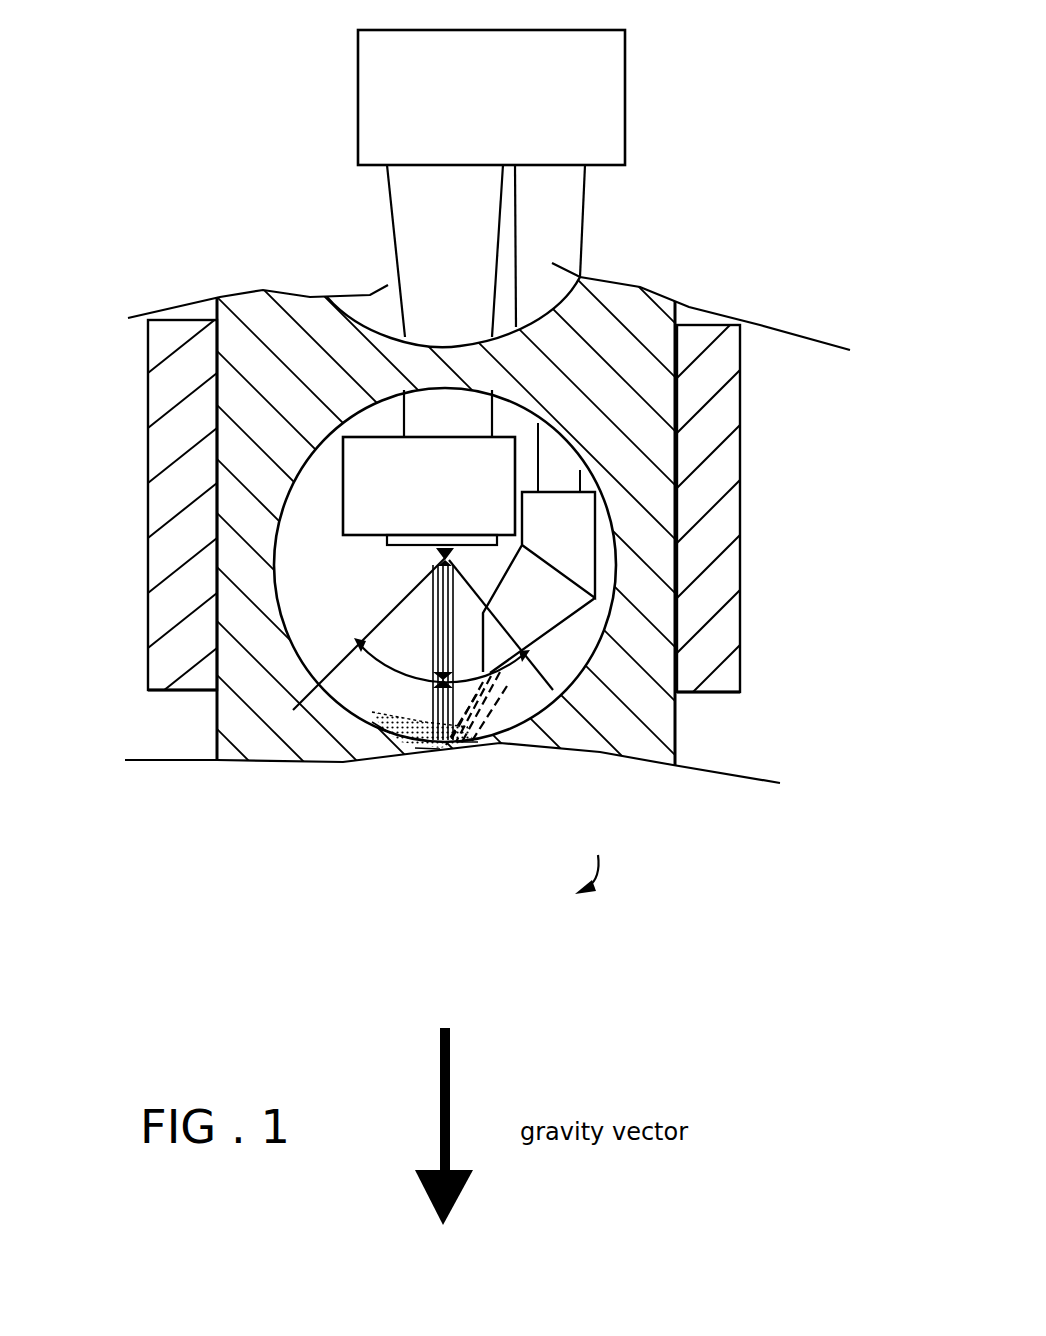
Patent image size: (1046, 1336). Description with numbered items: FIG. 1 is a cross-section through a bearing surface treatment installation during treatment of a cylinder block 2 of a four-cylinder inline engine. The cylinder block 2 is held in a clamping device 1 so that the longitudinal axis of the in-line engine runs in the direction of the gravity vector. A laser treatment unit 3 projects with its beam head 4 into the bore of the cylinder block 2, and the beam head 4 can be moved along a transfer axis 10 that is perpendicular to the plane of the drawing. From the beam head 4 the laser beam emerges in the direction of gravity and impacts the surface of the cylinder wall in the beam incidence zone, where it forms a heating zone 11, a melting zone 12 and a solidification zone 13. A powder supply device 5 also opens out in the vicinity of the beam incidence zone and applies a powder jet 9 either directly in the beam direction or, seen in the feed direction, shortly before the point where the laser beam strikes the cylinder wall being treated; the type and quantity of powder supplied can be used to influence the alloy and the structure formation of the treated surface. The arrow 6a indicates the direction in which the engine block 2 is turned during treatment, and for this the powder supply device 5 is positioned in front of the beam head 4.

The clamping device 1 is at (185, 358).
The cylinder block 2 is at (283, 345).
The laser treatment unit 3 is at (425, 267).
The beam head 4 is at (500, 455).
The powder supply device 5 is at (538, 600).
The arrow 6a is at (696, 900).
The powder jet 9 is at (495, 688).
The transfer axis 10 is at (553, 690).
The heating zone 11 is at (465, 740).
The melting zone 12 is at (425, 750).
The solidification zone 13 is at (380, 730).